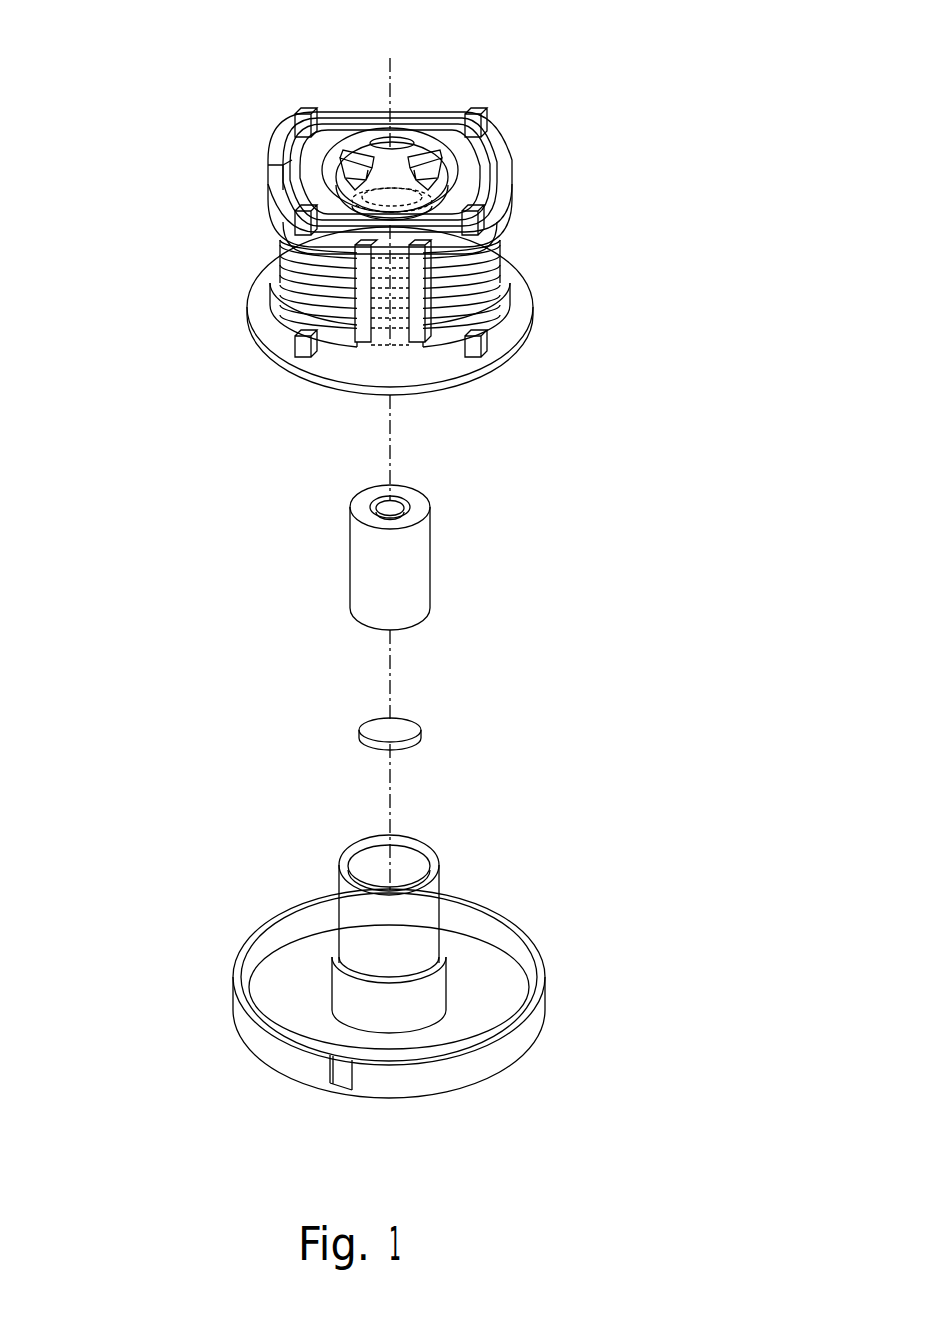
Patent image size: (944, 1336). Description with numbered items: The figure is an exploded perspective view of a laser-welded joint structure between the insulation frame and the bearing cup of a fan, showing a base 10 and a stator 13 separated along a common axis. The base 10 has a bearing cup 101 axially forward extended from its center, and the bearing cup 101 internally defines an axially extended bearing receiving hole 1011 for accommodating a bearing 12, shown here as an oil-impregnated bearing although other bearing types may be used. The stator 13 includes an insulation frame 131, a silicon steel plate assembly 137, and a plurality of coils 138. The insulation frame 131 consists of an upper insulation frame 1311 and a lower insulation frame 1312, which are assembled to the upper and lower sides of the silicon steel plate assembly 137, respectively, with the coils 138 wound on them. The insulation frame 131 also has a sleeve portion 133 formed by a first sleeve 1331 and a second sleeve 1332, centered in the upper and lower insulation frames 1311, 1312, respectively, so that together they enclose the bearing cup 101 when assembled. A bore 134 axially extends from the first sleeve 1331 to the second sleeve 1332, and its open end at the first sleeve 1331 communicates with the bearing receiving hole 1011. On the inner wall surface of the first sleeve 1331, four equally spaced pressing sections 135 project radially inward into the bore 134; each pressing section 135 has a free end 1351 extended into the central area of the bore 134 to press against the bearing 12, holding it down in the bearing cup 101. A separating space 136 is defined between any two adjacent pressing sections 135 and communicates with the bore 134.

The base 10 is at (548, 962).
The bearing cup 101 is at (440, 863).
The bearing receiving hole 1011 is at (415, 858).
The bearing 12 is at (420, 560).
The stator 13 is at (217, 138).
The insulation frame 131 is at (703, 196).
The upper insulation frame 1311 is at (470, 237).
The lower insulation frame 1312 is at (470, 300).
The sleeve portion 133 is at (122, 222).
The first sleeve 1331 is at (290, 178).
The second sleeve 1332 is at (388, 328).
The bore 134 is at (403, 150).
The pressing section 135 is at (345, 165).
The free end 1351 is at (390, 145).
The separating space 136 is at (300, 160).
The silicon steel plate assembly 137 is at (470, 298).
The coils 138 is at (485, 118).